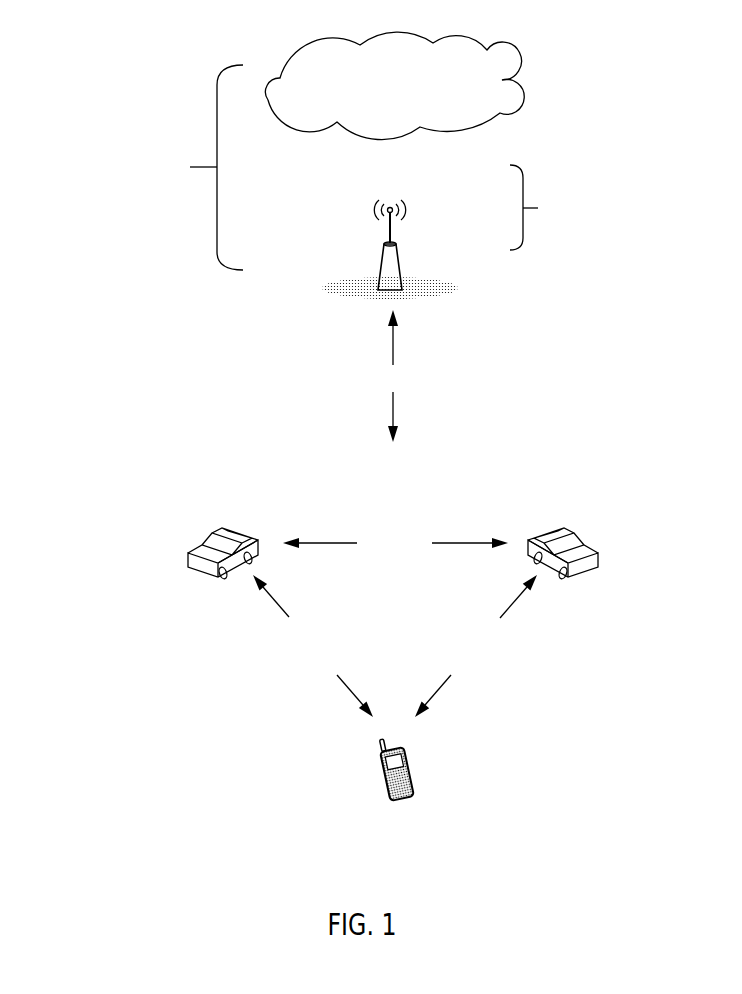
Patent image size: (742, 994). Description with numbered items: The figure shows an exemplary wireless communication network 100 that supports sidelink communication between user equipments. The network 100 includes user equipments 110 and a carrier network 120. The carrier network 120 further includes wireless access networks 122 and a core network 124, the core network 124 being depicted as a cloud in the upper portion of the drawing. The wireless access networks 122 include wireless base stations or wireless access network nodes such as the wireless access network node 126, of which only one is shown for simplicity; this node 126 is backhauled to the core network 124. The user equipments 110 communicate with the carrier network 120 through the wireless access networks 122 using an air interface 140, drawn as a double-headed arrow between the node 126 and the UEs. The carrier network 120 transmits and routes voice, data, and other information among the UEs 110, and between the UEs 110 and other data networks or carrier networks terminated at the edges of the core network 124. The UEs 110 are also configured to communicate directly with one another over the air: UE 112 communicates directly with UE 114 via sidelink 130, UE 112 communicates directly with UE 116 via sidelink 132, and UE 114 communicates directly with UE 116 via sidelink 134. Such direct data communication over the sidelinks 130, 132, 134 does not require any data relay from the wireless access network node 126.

The wireless communication network 100 is at (35, 52).
The user equipments 110 is at (108, 675).
The UE 112 is at (168, 553).
The UE 114 is at (617, 535).
The UE 116 is at (445, 788).
The carrier network 120 is at (167, 166).
The wireless access networks 122 is at (553, 207).
The core network 124 is at (523, 63).
The wireless access network node 126 is at (362, 230).
The sidelink 130 is at (403, 522).
The sidelink 132 is at (303, 657).
The sidelink 134 is at (497, 648).
The air interface 140 is at (474, 383).